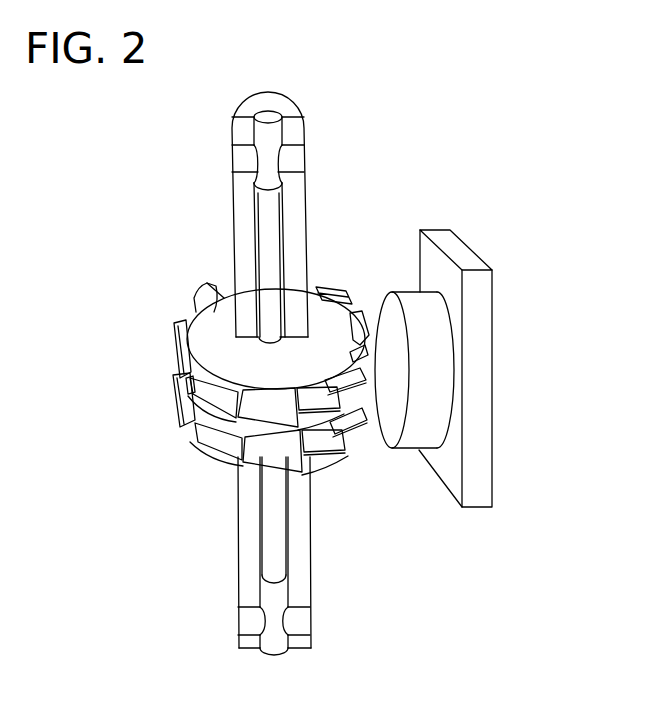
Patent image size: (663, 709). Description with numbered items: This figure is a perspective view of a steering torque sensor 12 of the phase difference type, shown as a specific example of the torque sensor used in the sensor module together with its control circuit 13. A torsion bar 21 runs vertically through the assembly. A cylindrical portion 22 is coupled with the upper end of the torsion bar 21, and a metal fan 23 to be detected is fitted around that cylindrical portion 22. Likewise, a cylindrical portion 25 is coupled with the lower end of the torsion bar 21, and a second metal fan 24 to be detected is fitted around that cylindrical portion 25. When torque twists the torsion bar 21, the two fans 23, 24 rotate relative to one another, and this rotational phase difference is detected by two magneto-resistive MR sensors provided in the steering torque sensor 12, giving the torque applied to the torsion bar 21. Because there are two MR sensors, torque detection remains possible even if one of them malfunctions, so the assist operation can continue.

The steering torque sensor 12 is at (420, 410).
The control circuit 13 is at (483, 473).
The torsion bar 21 is at (267, 255).
The cylindrical portion 22 is at (242, 227).
The metal fan 23 is at (152, 322).
The metal fan 24 is at (162, 403).
The cylindrical portion 25 is at (248, 552).